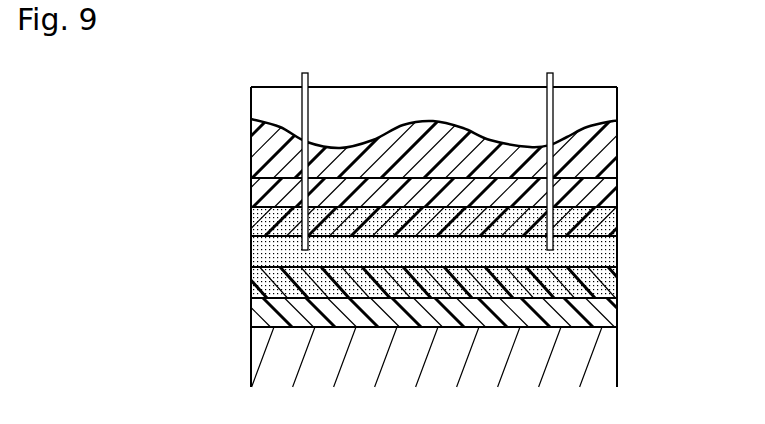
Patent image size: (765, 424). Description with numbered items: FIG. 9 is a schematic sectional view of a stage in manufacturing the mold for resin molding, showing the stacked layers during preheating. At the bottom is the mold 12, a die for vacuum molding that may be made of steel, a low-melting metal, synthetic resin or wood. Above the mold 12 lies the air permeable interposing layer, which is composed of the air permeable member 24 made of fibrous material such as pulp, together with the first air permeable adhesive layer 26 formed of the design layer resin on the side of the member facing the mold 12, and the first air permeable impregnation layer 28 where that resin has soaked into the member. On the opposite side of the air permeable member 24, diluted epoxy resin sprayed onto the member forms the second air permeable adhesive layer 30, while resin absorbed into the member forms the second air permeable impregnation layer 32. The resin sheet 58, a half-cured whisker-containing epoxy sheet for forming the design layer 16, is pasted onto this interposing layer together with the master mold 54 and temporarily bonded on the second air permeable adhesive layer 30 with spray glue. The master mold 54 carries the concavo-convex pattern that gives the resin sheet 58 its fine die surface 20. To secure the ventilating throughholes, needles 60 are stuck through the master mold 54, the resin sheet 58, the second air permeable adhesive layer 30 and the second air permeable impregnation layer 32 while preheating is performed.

The mold 12 is at (607, 366).
The design layer 16 is at (610, 152).
The die surface 20 is at (283, 120).
The air permeable member 24 is at (608, 252).
The first air permeable adhesive layer 26 is at (605, 310).
The first air permeable impregnation layer 28 is at (600, 280).
The second air permeable adhesive layer 30 is at (605, 195).
The second air permeable impregnation layer 32 is at (605, 223).
The master mold 54 is at (598, 105).
The resin sheet 58 is at (492, 136).
The needles 60 is at (302, 80).